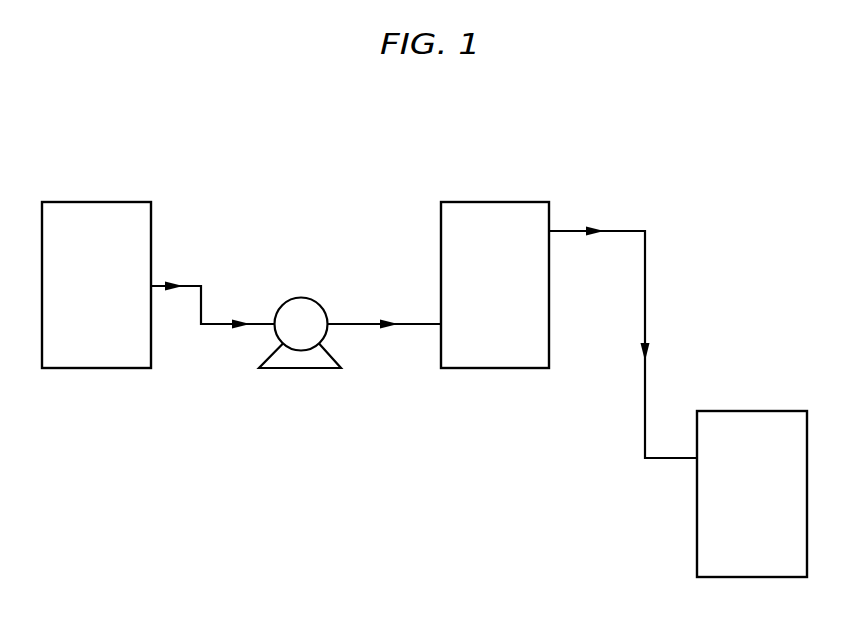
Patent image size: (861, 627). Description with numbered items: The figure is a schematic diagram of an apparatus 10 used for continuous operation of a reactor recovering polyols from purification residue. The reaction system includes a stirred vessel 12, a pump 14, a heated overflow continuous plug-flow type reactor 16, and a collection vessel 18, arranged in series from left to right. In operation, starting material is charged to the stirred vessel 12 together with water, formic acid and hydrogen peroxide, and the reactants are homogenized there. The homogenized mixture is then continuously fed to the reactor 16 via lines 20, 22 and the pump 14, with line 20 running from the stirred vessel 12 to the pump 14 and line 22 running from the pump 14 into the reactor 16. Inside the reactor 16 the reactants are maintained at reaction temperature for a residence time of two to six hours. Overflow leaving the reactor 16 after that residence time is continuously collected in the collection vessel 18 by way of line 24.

The apparatus 10 is at (312, 139).
The stirred vessel 12 is at (87, 298).
The pump 14 is at (291, 336).
The reactor 16 is at (485, 298).
The collection vessel 18 is at (743, 506).
The line 20 is at (256, 322).
The line 22 is at (372, 327).
The line 24 is at (650, 264).